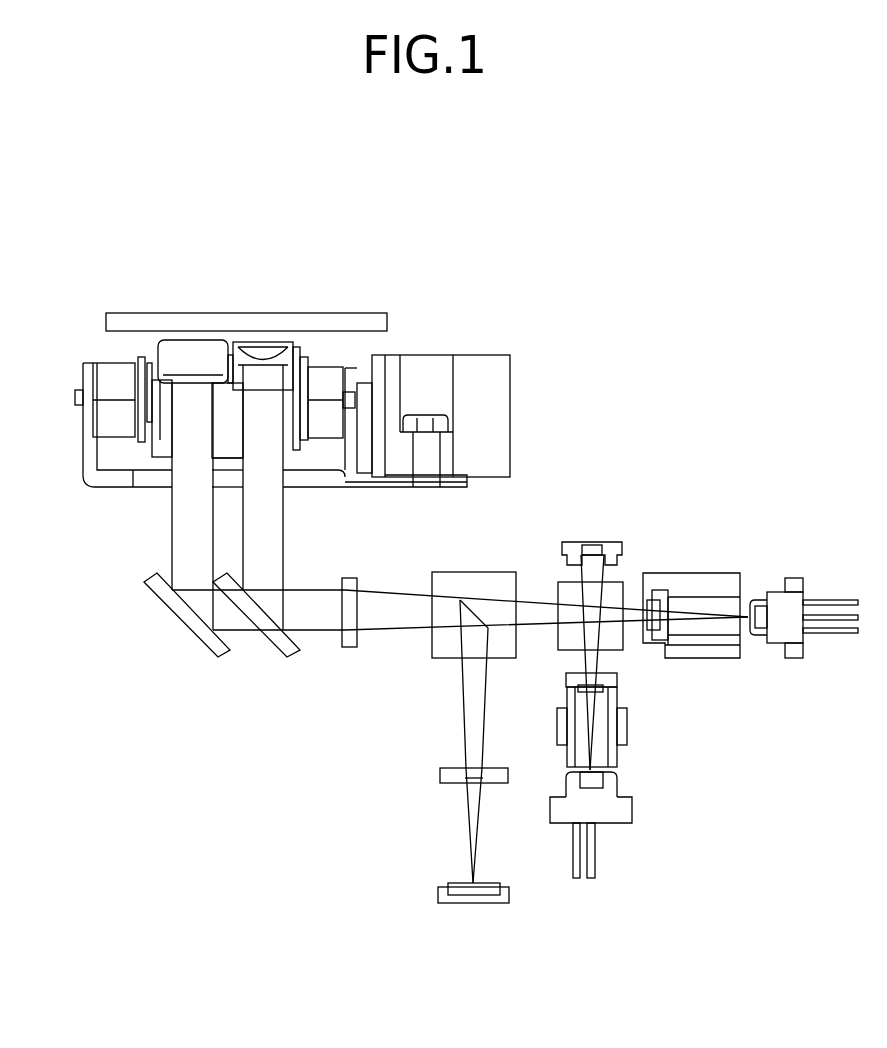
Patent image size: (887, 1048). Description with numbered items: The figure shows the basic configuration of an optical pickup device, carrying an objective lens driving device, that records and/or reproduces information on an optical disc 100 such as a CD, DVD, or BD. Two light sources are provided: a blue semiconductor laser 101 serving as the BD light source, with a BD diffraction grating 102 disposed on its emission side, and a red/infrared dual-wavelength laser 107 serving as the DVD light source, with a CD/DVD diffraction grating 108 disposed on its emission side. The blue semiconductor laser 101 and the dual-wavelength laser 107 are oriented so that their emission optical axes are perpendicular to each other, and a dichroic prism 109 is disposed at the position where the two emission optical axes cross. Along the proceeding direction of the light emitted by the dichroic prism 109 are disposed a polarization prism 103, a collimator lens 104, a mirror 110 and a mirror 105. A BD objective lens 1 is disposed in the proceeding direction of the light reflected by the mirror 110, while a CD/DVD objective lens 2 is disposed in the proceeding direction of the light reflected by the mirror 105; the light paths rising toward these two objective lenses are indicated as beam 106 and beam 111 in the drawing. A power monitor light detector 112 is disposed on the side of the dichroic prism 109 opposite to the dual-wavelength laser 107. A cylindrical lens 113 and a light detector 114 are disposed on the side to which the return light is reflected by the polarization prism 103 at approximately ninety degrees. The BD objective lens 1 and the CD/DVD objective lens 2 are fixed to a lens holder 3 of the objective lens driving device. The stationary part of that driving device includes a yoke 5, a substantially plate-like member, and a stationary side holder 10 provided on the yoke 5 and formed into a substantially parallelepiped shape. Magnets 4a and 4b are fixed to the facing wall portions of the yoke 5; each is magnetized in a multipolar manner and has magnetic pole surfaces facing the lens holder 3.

The BD objective lens 1 is at (190, 355).
The CD/DVD objective lens 2 is at (258, 352).
The lens holder 3 is at (163, 440).
The magnet 4a is at (108, 372).
The magnet 4b is at (330, 385).
The yoke 5 is at (90, 431).
The stationary side holder 10 is at (483, 400).
The optical disc 100 is at (297, 313).
The blue semiconductor laser 101 is at (788, 597).
The BD diffraction grating 102 is at (658, 593).
The polarization prism 103 is at (502, 577).
The collimator lens 104 is at (348, 650).
The mirror 105 is at (177, 610).
The first light beam 106 is at (197, 533).
The red/infrared dual-wavelength laser 107 is at (602, 805).
The CD/DVD diffraction grating 108 is at (610, 678).
The dichroic prism 109 is at (607, 637).
The mirror 110 is at (272, 640).
The second light beam 111 is at (258, 528).
The power monitor light detector 112 is at (590, 543).
The cylindrical lens 113 is at (440, 775).
The light detector 114 is at (458, 907).